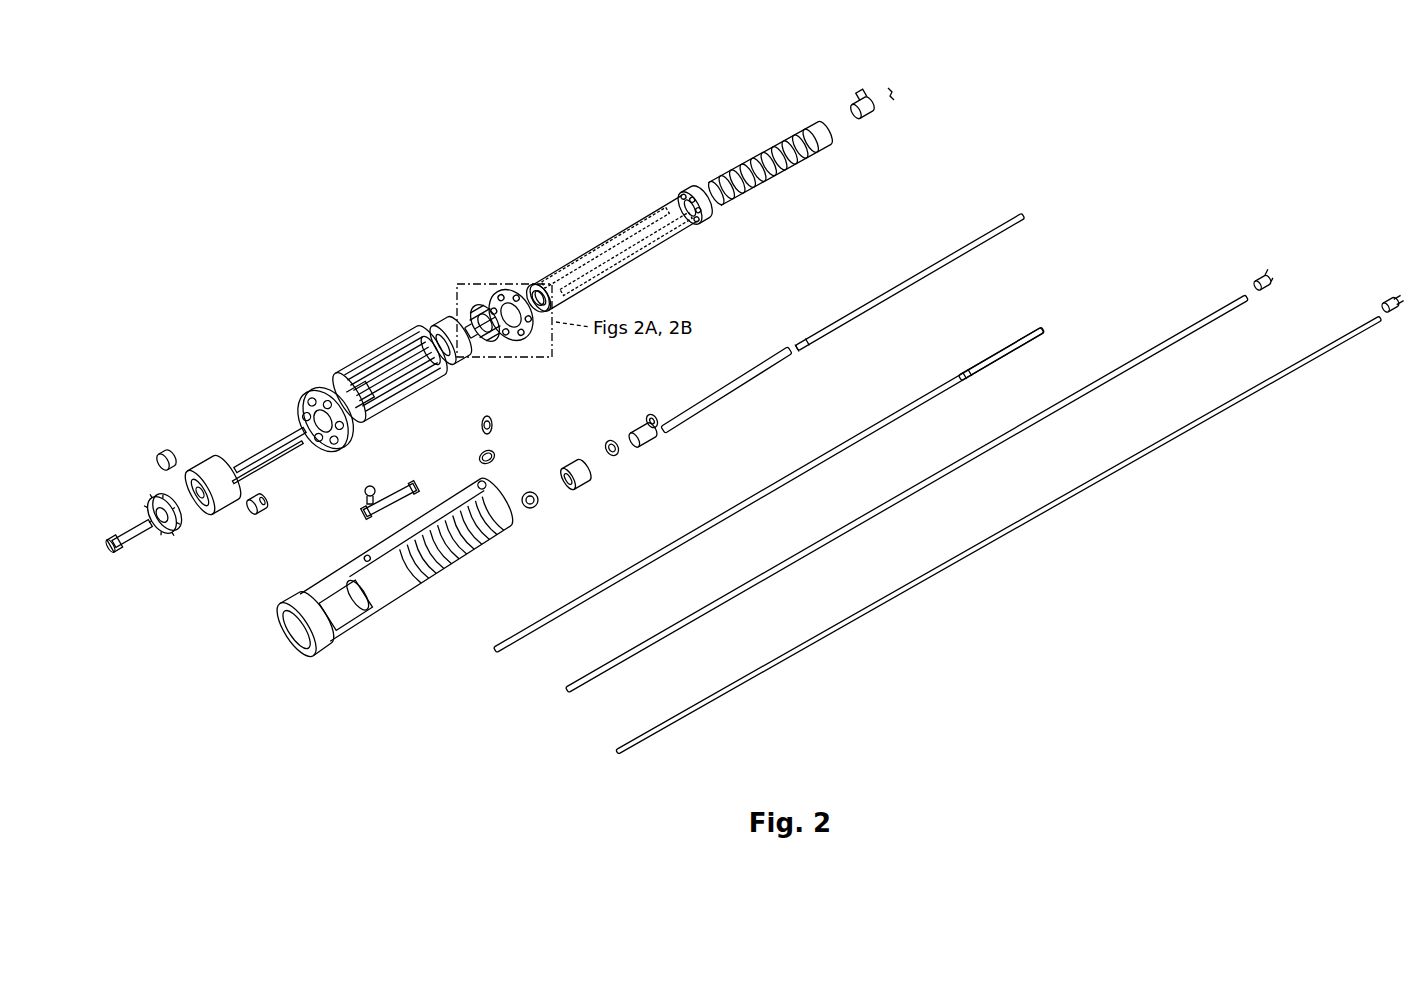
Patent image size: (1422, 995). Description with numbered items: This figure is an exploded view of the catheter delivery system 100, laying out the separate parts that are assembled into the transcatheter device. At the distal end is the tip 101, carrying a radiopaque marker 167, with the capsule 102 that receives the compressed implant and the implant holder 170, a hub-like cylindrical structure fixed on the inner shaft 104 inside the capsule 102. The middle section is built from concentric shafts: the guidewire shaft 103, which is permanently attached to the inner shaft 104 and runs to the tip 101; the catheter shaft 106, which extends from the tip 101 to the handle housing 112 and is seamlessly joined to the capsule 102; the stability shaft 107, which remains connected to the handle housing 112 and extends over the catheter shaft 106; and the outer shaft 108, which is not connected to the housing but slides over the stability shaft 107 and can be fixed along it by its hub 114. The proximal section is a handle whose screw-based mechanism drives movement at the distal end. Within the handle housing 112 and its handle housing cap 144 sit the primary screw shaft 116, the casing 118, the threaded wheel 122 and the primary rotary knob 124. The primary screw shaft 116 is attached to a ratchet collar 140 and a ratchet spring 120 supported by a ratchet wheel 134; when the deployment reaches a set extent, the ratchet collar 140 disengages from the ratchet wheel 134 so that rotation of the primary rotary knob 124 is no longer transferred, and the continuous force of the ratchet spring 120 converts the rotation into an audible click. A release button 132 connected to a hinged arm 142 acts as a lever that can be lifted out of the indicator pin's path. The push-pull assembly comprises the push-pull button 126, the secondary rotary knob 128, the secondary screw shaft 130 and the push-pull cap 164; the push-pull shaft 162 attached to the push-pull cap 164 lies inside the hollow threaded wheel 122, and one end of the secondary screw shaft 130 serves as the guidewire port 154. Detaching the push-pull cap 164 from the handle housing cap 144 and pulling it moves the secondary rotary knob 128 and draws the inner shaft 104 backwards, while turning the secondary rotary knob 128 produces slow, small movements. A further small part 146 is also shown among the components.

The catheter delivery system 100 is at (1058, 126).
The tip 101 is at (1397, 314).
The capsule 102 is at (985, 378).
The guidewire shaft 103 is at (1068, 495).
The inner shaft 104 is at (887, 508).
The catheter shaft 106 is at (755, 505).
The stability shaft 107 is at (888, 305).
The outer shaft 108 is at (712, 415).
The handle housing 112 is at (447, 587).
The hub 114 is at (657, 410).
The primary screw shaft 116 is at (740, 165).
The casing 118 is at (606, 237).
The ratchet spring 120 is at (498, 347).
The threaded wheel 122 is at (428, 332).
The primary rotary knob 124 is at (378, 357).
The push-pull button 126 is at (245, 520).
The secondary rotary knob 128 is at (148, 496).
The secondary screw shaft 130 is at (137, 540).
The release button 132 is at (358, 492).
The ratchet wheel 134 is at (482, 293).
The ratchet collar 140 is at (502, 283).
The arm 142 is at (402, 487).
The handle housing cap 144 is at (296, 390).
The connector 146 is at (876, 126).
The guidewire port 154 is at (105, 535).
The push-pull shaft 162 is at (253, 445).
The push-pull cap 164 is at (192, 447).
The radiopaque marker 167 is at (1390, 296).
The implant holder 170 is at (1263, 294).